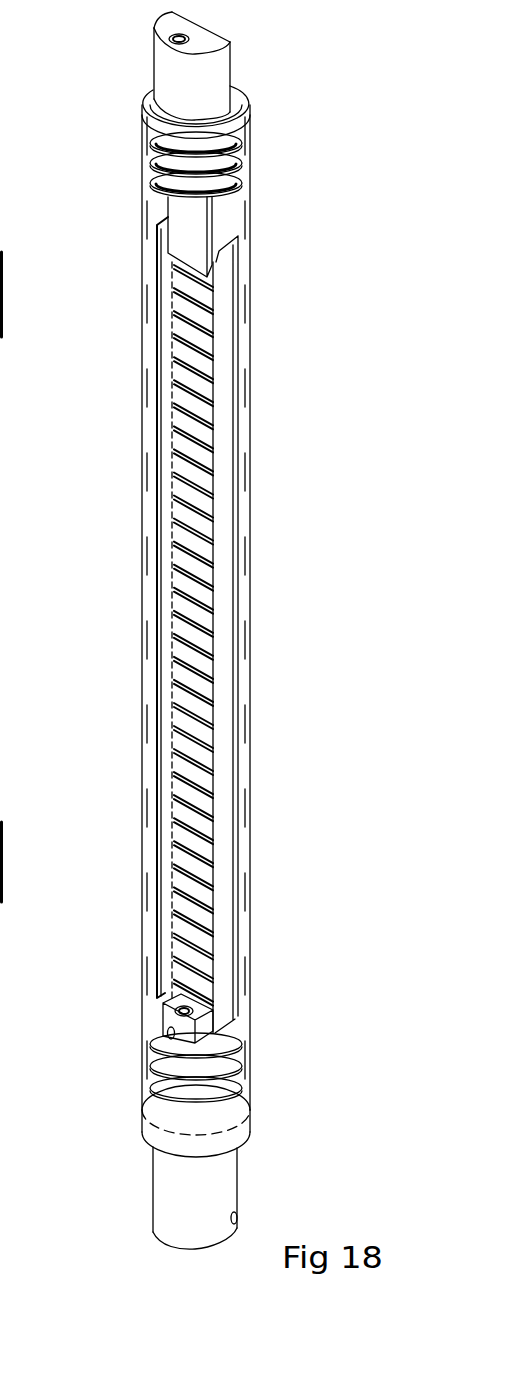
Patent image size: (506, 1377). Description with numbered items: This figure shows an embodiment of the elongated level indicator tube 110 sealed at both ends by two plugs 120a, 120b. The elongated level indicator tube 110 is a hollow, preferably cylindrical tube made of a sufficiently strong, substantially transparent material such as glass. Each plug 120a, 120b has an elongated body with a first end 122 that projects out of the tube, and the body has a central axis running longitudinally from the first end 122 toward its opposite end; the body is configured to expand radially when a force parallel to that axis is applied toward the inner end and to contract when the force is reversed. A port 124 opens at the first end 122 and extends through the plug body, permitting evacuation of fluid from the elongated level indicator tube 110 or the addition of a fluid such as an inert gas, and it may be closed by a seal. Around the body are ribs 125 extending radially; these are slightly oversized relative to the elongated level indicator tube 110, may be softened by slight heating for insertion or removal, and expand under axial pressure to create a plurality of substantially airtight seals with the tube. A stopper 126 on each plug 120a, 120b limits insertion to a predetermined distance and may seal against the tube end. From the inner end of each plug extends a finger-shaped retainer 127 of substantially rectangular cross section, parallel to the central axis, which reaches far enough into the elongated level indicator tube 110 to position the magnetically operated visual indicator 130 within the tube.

The elongated level indicator tube 110 is at (246, 190).
The plug 120a is at (221, 91).
The plug 120b is at (167, 1212).
The first end 122 is at (212, 38).
The port 124 is at (179, 41).
The ribs 125 is at (172, 183).
The stopper 126 is at (242, 120).
The finger-shaped retainer 127 is at (218, 227).
The magnetically operated visual indicator 130 is at (227, 322).